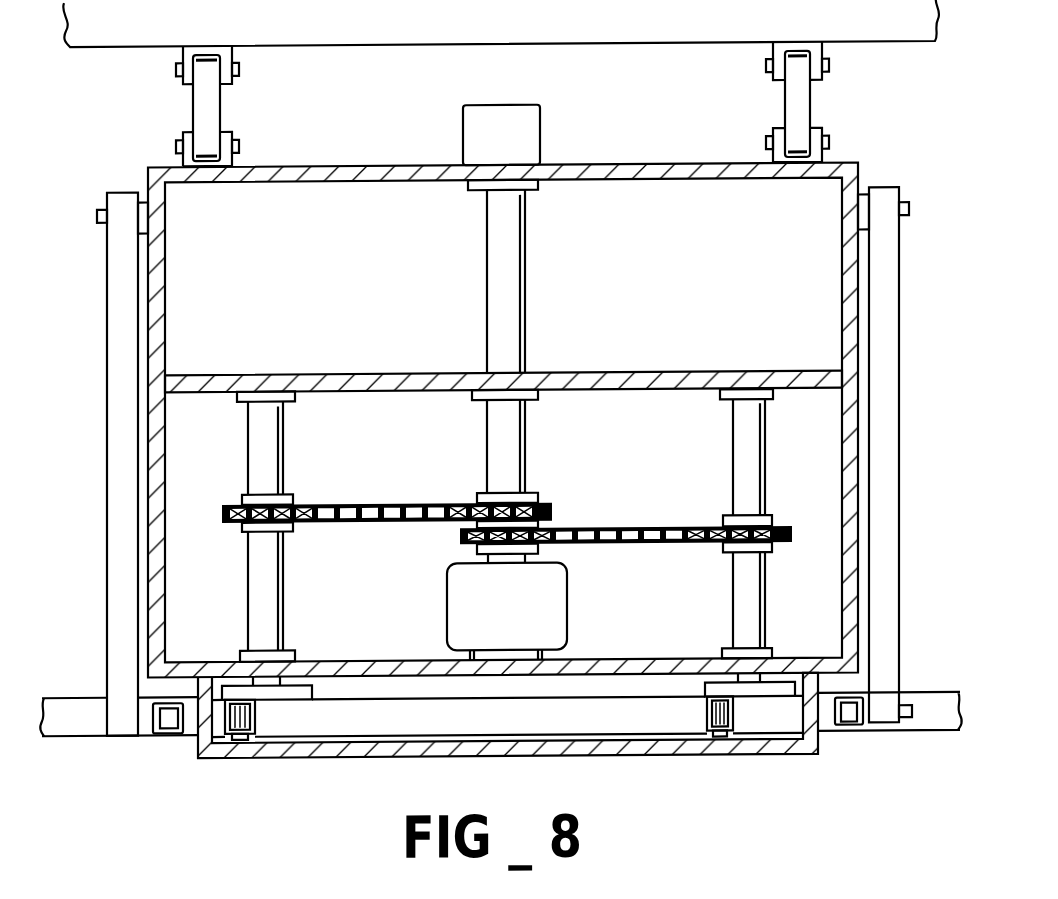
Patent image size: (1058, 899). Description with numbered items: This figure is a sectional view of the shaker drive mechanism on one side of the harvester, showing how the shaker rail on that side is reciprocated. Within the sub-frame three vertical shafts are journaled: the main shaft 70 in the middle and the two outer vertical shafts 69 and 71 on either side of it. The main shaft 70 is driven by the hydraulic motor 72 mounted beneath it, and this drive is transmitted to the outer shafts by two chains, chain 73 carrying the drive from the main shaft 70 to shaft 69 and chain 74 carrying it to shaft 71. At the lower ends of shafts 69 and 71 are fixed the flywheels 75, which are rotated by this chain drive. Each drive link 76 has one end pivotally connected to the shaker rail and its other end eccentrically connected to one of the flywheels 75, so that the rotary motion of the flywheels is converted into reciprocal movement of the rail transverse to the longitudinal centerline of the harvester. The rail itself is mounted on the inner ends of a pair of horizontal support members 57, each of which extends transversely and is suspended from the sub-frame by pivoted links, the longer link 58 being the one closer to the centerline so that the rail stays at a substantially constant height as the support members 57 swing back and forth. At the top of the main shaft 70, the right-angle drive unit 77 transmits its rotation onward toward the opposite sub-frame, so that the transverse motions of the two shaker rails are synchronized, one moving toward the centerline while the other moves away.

The horizontal support member 57 is at (170, 733).
The link 58 is at (120, 527).
The vertical shaft 69 is at (266, 450).
The main shaft 70 is at (502, 455).
The vertical shaft 71 is at (755, 450).
The hydraulic motor 72 is at (568, 607).
The chain 73 is at (356, 522).
The chain 74 is at (619, 530).
The flywheel 75 is at (310, 698).
The drive link 76 is at (255, 717).
The right-angle drive unit 77 is at (531, 127).